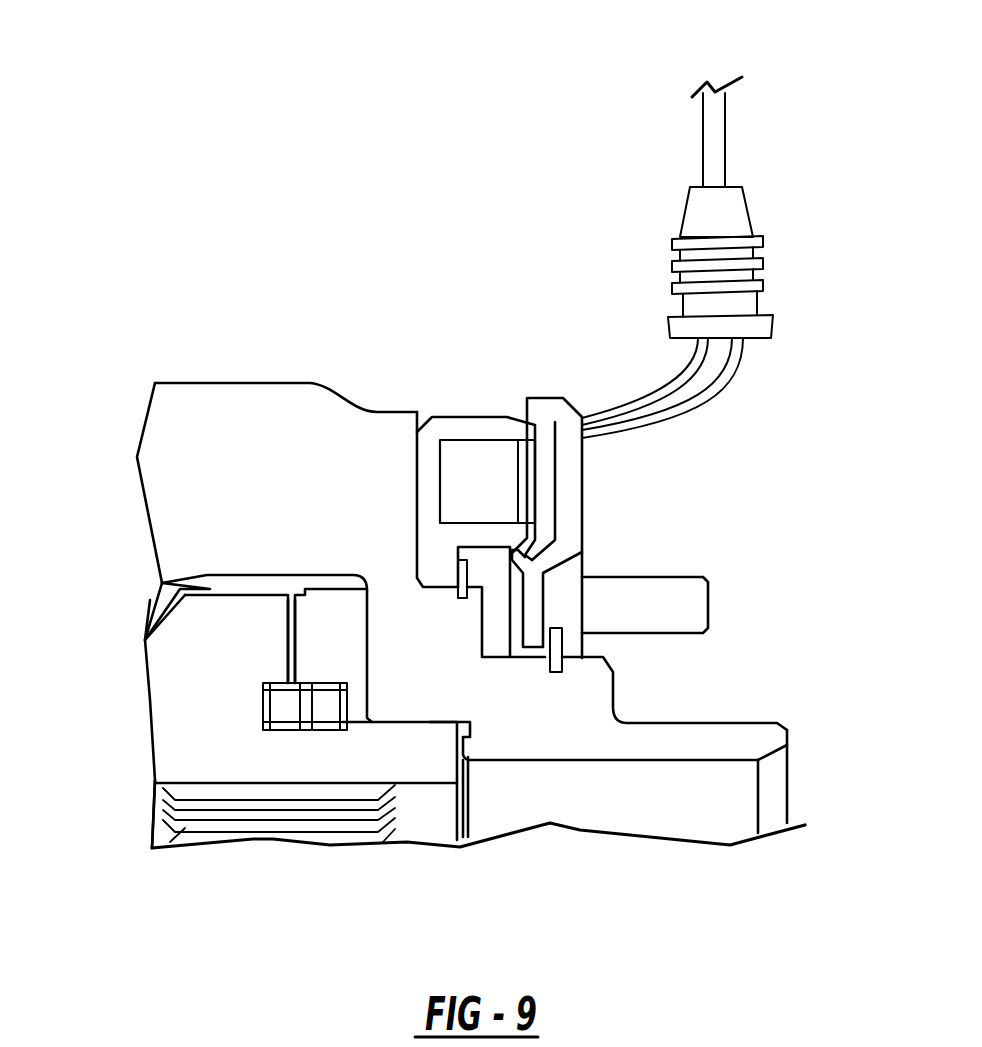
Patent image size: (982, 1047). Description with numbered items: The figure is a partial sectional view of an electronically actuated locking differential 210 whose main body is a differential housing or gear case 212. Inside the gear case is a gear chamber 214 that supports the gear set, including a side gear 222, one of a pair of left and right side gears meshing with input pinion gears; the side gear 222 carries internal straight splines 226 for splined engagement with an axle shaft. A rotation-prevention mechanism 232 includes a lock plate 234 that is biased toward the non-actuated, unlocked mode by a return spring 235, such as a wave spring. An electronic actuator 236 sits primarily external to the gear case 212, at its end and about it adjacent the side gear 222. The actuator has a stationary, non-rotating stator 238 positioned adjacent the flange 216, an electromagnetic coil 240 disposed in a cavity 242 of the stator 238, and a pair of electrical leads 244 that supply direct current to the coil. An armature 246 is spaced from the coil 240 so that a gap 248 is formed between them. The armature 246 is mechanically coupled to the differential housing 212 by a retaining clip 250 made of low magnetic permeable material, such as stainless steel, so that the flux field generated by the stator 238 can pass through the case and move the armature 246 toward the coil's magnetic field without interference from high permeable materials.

The electronically actuated locking differential 210 is at (577, 132).
The differential housing or gear case 212 is at (185, 403).
The gear chamber 214 is at (140, 758).
The flange 216 is at (373, 428).
The side gear 222 is at (235, 755).
The internal straight splines 226 is at (292, 812).
The rotation-prevention mechanism 232 is at (118, 553).
The lock plate 234 is at (330, 623).
The return spring 235 is at (310, 710).
The electronic actuator 236 is at (818, 372).
The stator 238 is at (470, 427).
The electromagnetic coil 240 is at (507, 460).
The cavity 242 is at (457, 458).
The electrical leads 244 is at (682, 382).
The armature 246 is at (573, 490).
The gap 248 is at (545, 442).
The retaining clip 250 is at (557, 647).